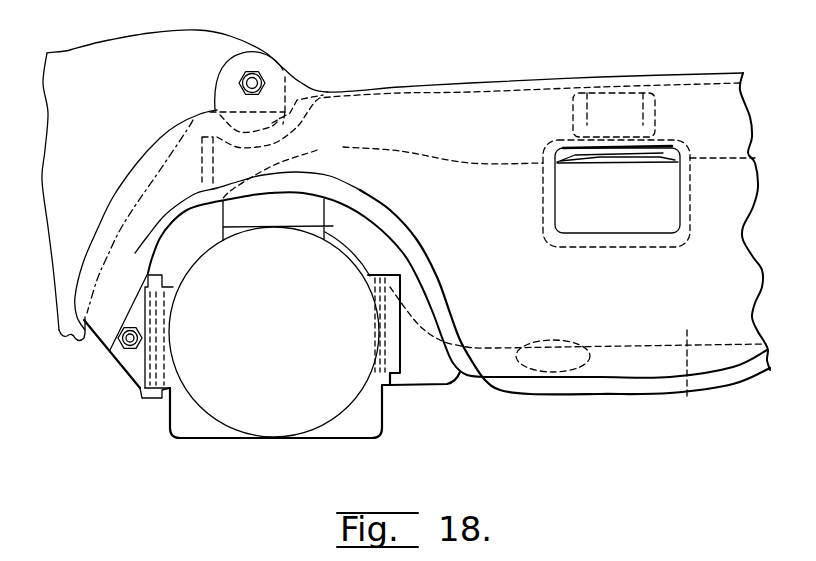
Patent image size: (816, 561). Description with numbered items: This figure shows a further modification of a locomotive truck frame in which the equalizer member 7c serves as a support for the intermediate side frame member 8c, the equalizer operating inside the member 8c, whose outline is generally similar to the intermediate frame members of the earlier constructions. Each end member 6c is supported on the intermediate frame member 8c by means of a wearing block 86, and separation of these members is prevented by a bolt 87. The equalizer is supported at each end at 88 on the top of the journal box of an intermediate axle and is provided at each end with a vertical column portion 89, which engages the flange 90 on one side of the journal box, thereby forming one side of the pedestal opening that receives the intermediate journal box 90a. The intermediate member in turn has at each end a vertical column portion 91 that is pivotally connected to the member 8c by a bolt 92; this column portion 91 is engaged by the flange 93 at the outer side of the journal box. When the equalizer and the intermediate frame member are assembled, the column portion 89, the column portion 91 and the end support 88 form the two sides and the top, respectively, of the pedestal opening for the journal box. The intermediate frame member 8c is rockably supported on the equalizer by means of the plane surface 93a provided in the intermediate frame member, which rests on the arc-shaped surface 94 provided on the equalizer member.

The end member 6c is at (83, 60).
The equalizer member 7c is at (686, 383).
The intermediate side frame member 8c is at (500, 100).
The wearing block 86 is at (381, 163).
The bolt 87 is at (263, 80).
The end support of the equalizer 88 is at (292, 220).
The vertical column portion 89 is at (437, 375).
The flange 90 is at (390, 333).
The intermediate journal box 90a is at (287, 413).
The vertical column portion 91 is at (140, 375).
The bolt 92 is at (123, 347).
The flange 93 is at (160, 333).
The plane surface 93a is at (647, 147).
The arc-shaped surface 94 is at (573, 150).